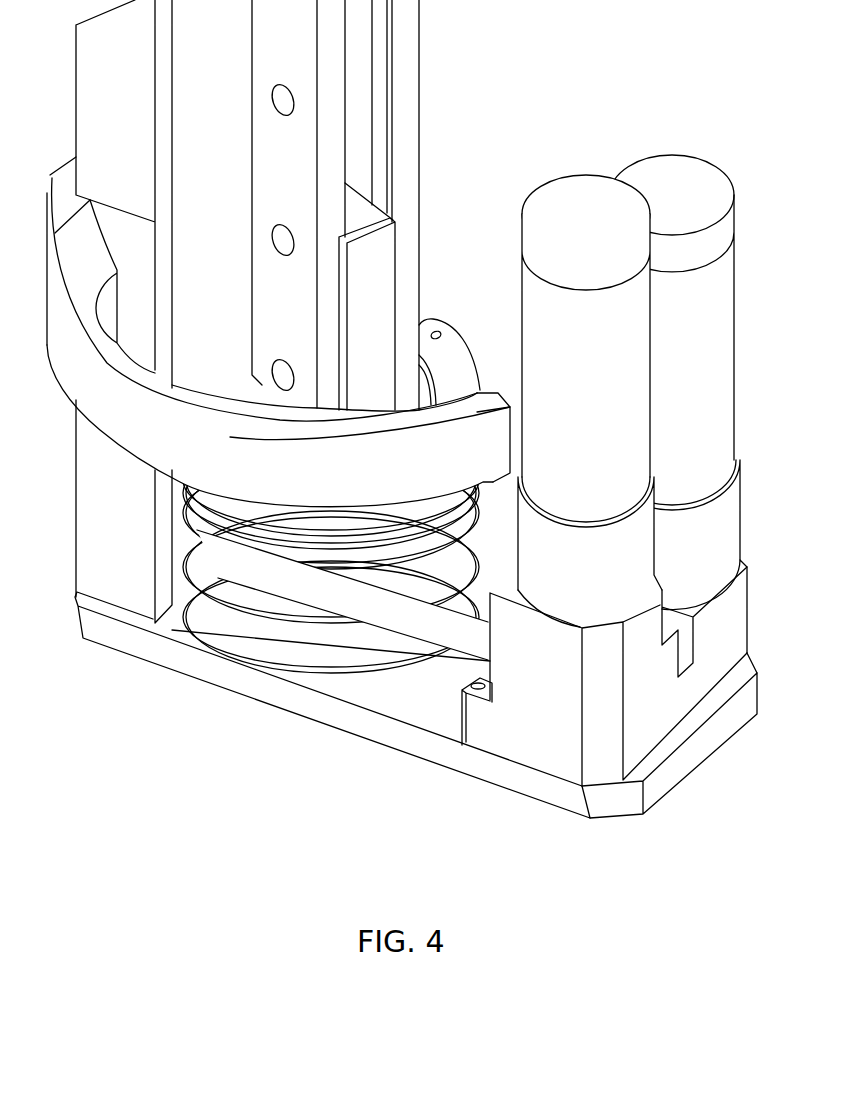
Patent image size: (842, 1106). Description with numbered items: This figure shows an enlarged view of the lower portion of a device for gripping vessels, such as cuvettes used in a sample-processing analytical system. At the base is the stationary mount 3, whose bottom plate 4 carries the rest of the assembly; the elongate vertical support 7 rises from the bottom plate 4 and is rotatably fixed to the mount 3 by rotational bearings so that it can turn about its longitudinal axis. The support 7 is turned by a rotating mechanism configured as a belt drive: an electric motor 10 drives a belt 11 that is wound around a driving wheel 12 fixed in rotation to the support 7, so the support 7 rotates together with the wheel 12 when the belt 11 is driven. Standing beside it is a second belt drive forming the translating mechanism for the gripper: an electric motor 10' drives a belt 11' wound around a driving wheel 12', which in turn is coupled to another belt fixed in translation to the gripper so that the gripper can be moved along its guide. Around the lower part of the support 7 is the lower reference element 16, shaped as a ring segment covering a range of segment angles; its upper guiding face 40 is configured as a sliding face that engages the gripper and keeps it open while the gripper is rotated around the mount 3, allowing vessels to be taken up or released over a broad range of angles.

The stationary mount 3 is at (102, 70).
The elongate vertical support 7 is at (407, 35).
The upper guiding face 40 is at (165, 400).
The lower reference element 16 is at (205, 468).
The driving wheel 12 is at (322, 581).
The driving wheel 12' is at (294, 628).
The belt 11 is at (331, 657).
The belt 11' is at (342, 659).
The electric motor 10 is at (692, 404).
The electric motor 10' is at (650, 401).
The bottom plate 4 is at (503, 773).